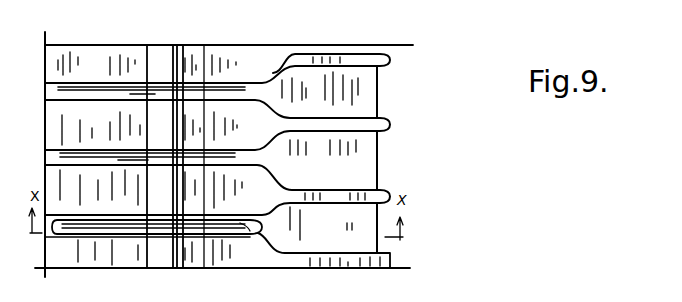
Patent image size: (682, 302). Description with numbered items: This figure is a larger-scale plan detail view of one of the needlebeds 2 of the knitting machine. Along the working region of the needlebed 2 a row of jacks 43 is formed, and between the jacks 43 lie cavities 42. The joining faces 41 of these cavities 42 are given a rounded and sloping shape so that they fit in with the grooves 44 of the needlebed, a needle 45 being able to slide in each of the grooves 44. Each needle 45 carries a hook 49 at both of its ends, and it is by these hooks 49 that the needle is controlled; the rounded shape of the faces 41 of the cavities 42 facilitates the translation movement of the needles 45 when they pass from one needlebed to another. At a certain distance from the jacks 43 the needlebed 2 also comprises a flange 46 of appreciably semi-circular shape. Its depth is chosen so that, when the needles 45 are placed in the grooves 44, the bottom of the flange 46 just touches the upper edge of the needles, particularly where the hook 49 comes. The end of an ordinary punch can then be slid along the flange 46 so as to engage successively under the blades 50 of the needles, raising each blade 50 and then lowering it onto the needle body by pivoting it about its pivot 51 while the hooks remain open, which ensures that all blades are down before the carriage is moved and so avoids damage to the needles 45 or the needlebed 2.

The needlebed 2 is at (333, 268).
The joining faces 41 is at (285, 54).
The cavities 42 is at (360, 93).
The jacks 43 is at (388, 190).
The grooves 44 is at (110, 89).
The needle 45 is at (58, 240).
The flange 46 is at (197, 68).
The hook 49 is at (256, 236).
The blades 50 is at (222, 240).
The pivot 51 is at (125, 237).